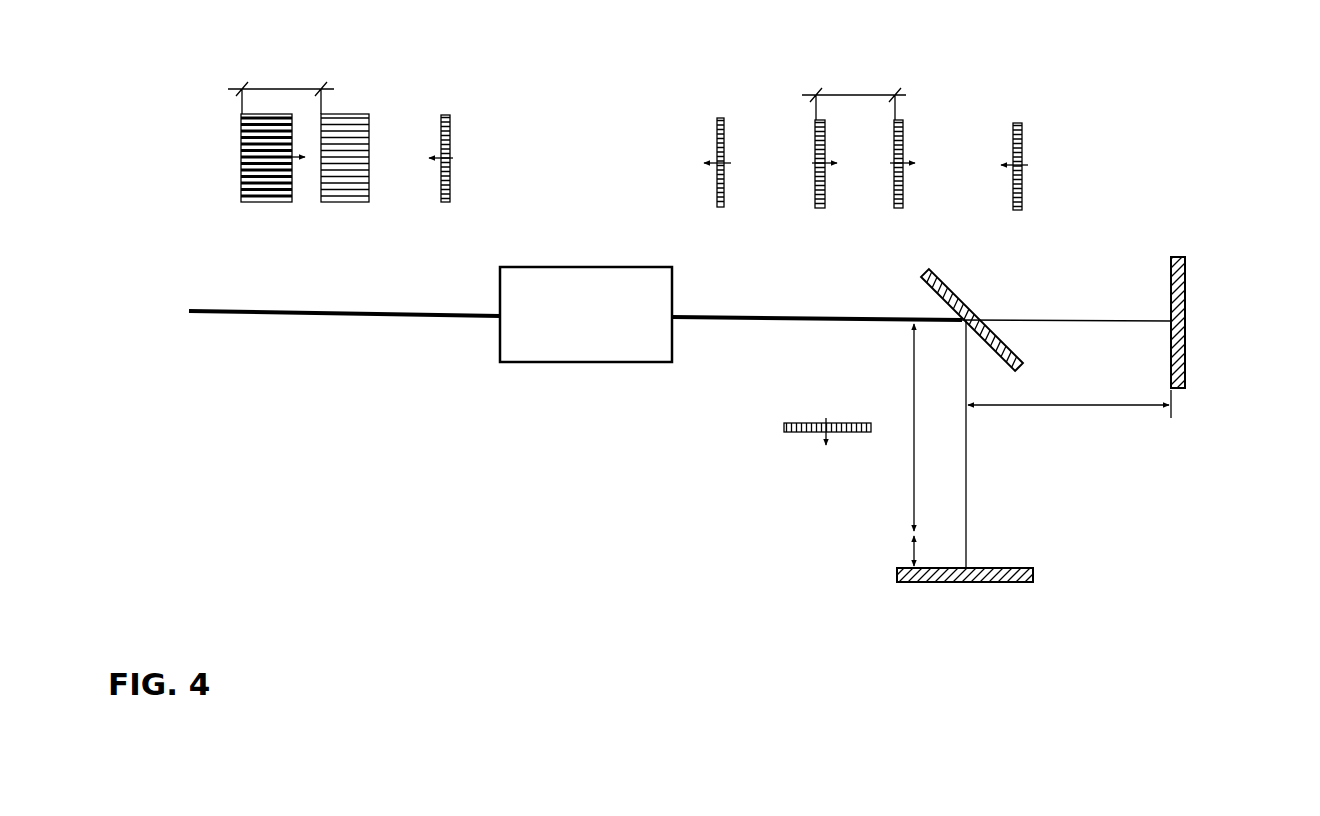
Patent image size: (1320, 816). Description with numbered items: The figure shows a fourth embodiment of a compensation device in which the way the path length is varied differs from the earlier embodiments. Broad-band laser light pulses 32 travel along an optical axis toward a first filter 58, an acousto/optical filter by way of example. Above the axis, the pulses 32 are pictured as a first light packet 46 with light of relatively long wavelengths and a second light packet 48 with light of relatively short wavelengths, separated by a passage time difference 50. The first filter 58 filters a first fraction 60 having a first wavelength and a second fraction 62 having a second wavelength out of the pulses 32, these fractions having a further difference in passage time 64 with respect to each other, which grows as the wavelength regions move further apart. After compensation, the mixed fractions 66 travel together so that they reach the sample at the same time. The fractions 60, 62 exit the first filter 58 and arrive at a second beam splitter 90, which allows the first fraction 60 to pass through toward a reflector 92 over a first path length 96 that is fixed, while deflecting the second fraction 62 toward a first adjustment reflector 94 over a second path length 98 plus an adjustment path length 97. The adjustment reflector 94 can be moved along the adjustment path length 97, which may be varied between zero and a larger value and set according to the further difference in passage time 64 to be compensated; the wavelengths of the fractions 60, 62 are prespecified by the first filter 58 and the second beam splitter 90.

The broad-band laser light pulses 32 is at (286, 315).
The first light packet 46 is at (241, 130).
The second light packet 48 is at (369, 130).
The passage time difference 50 is at (278, 89).
The first filter 58 is at (578, 363).
The first fraction 60 is at (815, 128).
The second fraction 62 is at (903, 138).
The further difference in passage time 64 is at (865, 95).
The mixed fractions 66 is at (450, 125).
The second beam splitter 90 is at (948, 280).
The reflector 92 is at (1186, 277).
The first adjustment reflector 94 is at (962, 583).
The first path length 96 is at (1065, 405).
The adjustment path length 97 is at (908, 550).
The second path length 98 is at (913, 398).